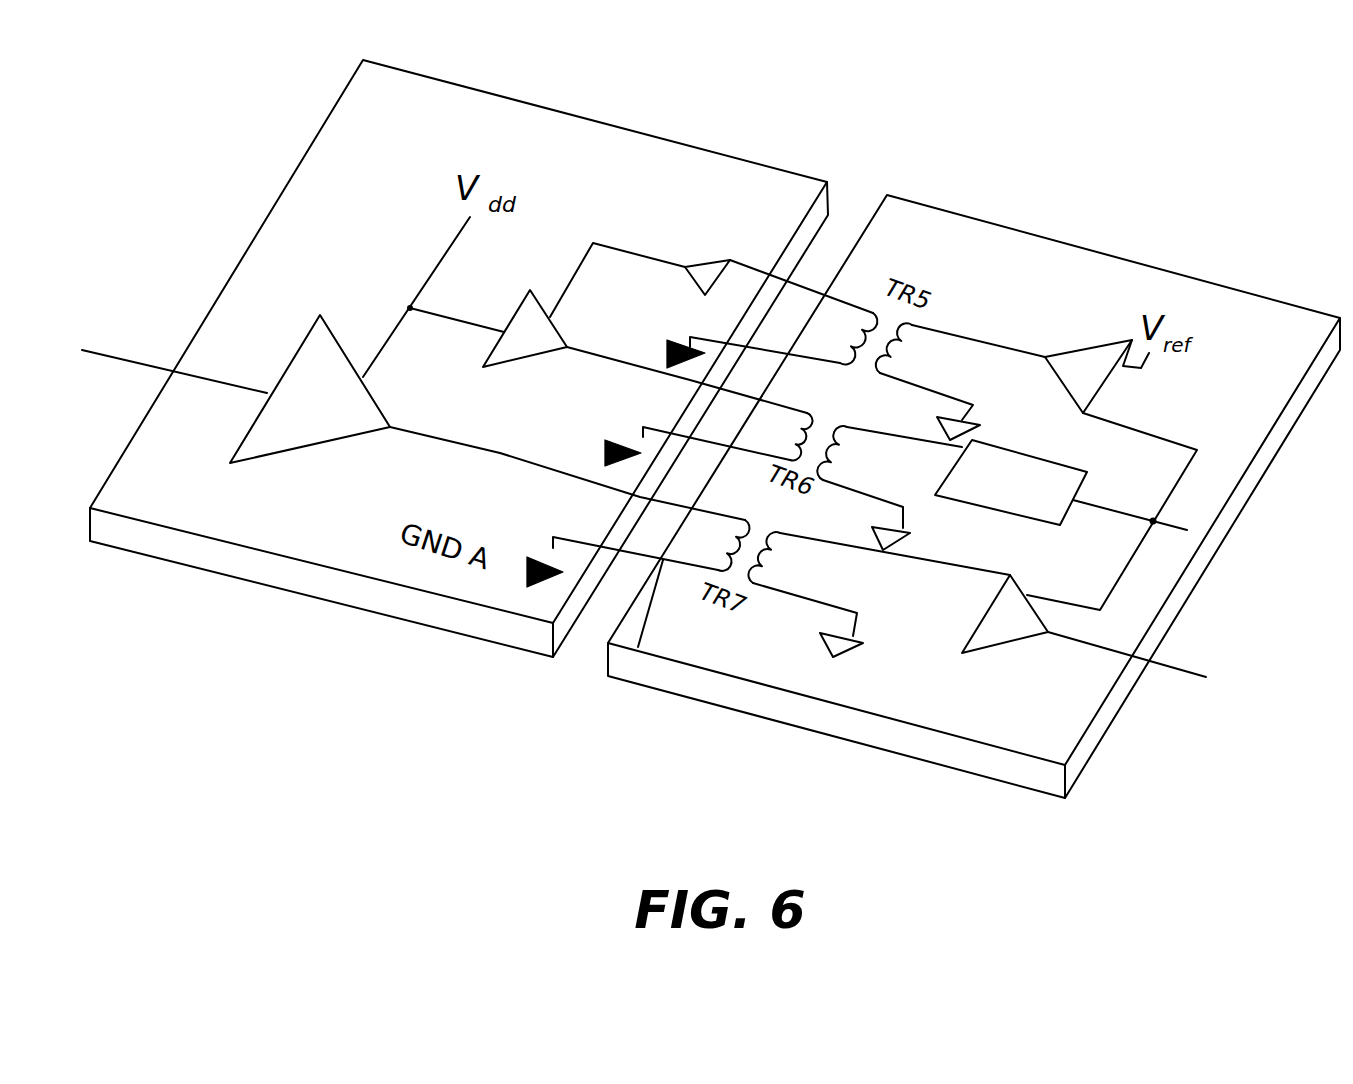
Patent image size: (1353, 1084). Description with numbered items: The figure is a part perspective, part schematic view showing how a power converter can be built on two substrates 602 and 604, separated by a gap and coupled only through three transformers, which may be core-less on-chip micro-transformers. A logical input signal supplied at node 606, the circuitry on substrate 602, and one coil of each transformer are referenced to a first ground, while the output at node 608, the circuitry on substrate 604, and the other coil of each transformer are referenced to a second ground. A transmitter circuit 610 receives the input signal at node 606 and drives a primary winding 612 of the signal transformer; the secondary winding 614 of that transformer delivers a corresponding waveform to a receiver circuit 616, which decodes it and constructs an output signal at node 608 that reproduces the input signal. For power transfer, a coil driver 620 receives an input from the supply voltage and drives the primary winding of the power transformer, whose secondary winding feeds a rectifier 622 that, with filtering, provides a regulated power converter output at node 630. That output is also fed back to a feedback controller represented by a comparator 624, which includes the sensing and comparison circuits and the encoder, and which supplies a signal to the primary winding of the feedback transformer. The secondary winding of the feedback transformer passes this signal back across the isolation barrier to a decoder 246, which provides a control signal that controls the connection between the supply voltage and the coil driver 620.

The substrate 602 is at (270, 587).
The substrate 604 is at (812, 728).
The node 606 is at (115, 357).
The node 608 is at (1177, 675).
The transmitter circuit 610 is at (312, 443).
The primary winding 612 is at (638, 647).
The secondary winding 614 is at (790, 543).
The receiver circuit 616 is at (1010, 640).
The coil driver 620 is at (523, 360).
The rectifier 622 is at (978, 507).
The comparator 624 is at (1095, 347).
The node 630 is at (1153, 521).
The decoder 246 is at (710, 258).